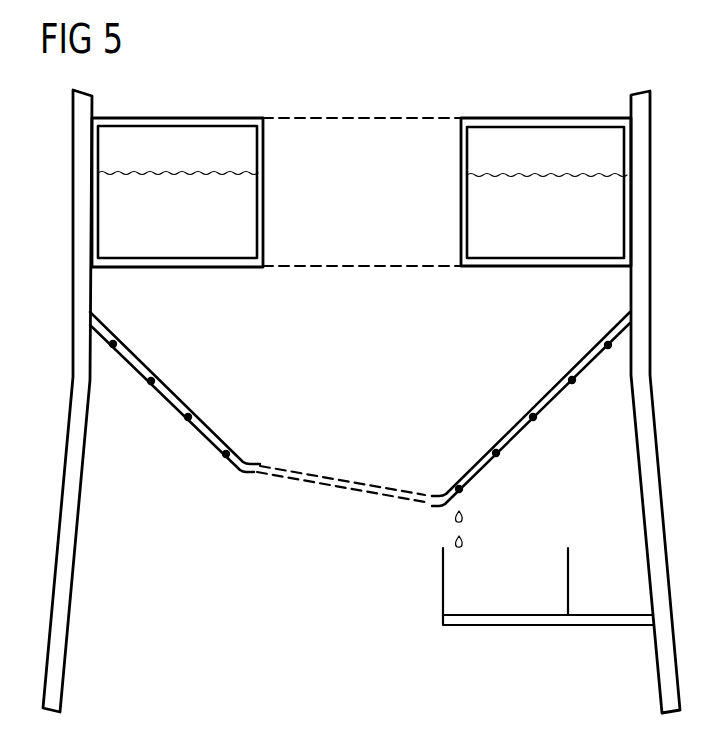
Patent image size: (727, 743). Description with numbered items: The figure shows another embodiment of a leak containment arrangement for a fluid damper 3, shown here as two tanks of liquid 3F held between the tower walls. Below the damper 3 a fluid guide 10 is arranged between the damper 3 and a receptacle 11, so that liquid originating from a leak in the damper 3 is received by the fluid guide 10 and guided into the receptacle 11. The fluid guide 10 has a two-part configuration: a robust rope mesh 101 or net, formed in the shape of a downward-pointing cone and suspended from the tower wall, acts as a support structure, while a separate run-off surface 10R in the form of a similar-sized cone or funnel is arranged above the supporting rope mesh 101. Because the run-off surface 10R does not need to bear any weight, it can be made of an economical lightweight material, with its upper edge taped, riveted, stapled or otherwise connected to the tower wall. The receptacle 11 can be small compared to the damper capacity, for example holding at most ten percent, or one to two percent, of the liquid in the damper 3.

The fluid damper 3 is at (361, 151).
The fluid-filled battery cell 3F is at (175, 192).
The fluid guide 10 is at (360, 441).
The run-off surface 10R is at (181, 391).
The rope mesh 101 is at (478, 473).
The receptacle 11 is at (443, 580).